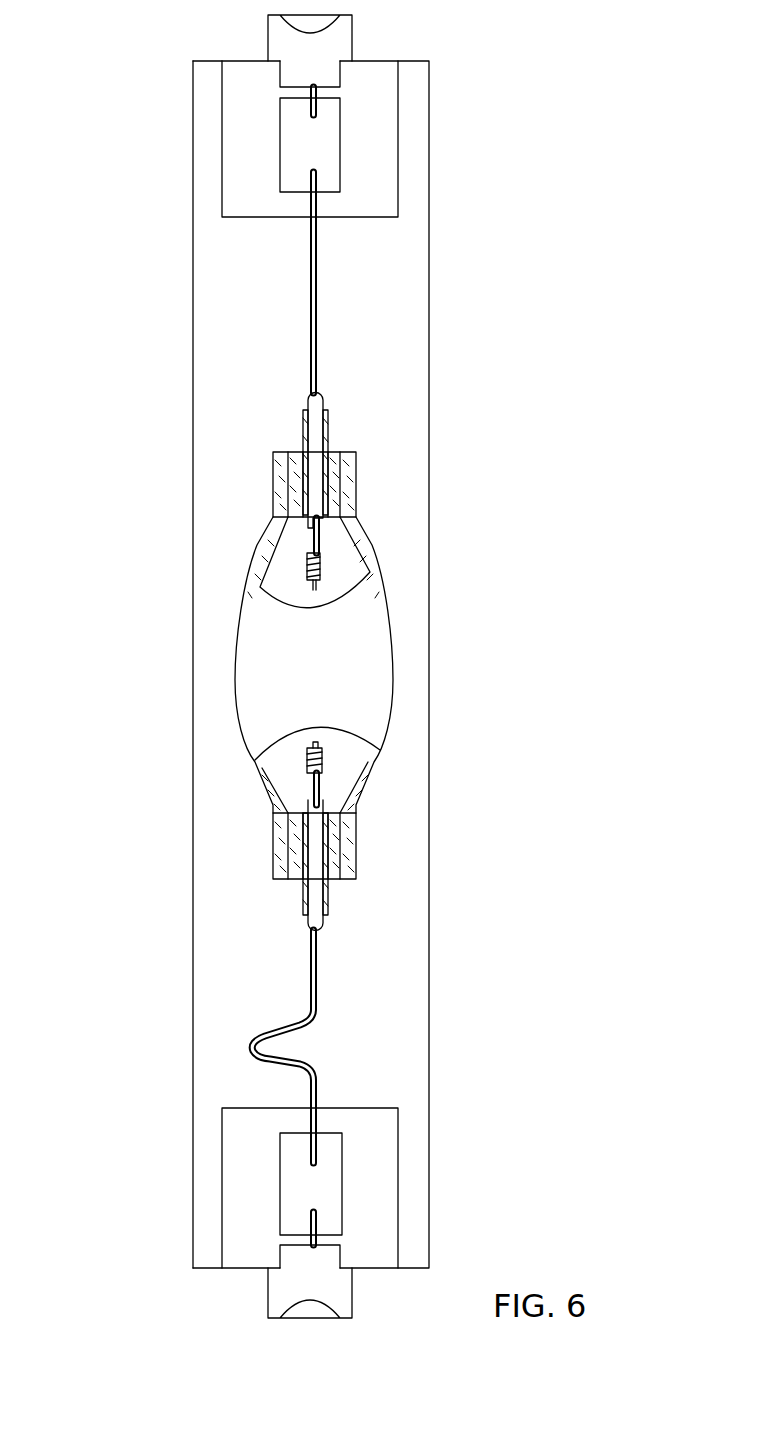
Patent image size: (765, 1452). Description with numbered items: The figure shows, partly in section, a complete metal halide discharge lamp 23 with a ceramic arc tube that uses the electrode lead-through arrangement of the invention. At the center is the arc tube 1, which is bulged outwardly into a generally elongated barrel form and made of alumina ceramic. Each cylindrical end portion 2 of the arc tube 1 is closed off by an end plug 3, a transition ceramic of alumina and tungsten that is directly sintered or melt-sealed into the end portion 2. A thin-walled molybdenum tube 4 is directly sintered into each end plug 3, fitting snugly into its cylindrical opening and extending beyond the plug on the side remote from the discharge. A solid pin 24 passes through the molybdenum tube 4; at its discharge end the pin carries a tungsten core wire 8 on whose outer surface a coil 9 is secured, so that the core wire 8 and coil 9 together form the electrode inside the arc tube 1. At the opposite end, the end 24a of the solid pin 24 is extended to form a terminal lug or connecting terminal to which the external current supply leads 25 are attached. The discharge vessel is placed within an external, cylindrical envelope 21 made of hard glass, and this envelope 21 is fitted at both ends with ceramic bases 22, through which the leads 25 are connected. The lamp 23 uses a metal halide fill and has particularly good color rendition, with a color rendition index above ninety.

The arc tube 1 is at (414, 680).
The end portion 2 is at (311, 664).
The end plug 3 is at (332, 501).
The molybdenum tube 4 is at (288, 468).
The core wire 8 is at (318, 545).
The coil 9 is at (307, 570).
The envelope 21 is at (193, 683).
The ceramic bases 22 is at (268, 1297).
The lamp 23 is at (312, 641).
The solid pin 24 is at (315, 493).
The end of solid pin 24a is at (323, 399).
The external current supply leads 25 is at (310, 268).